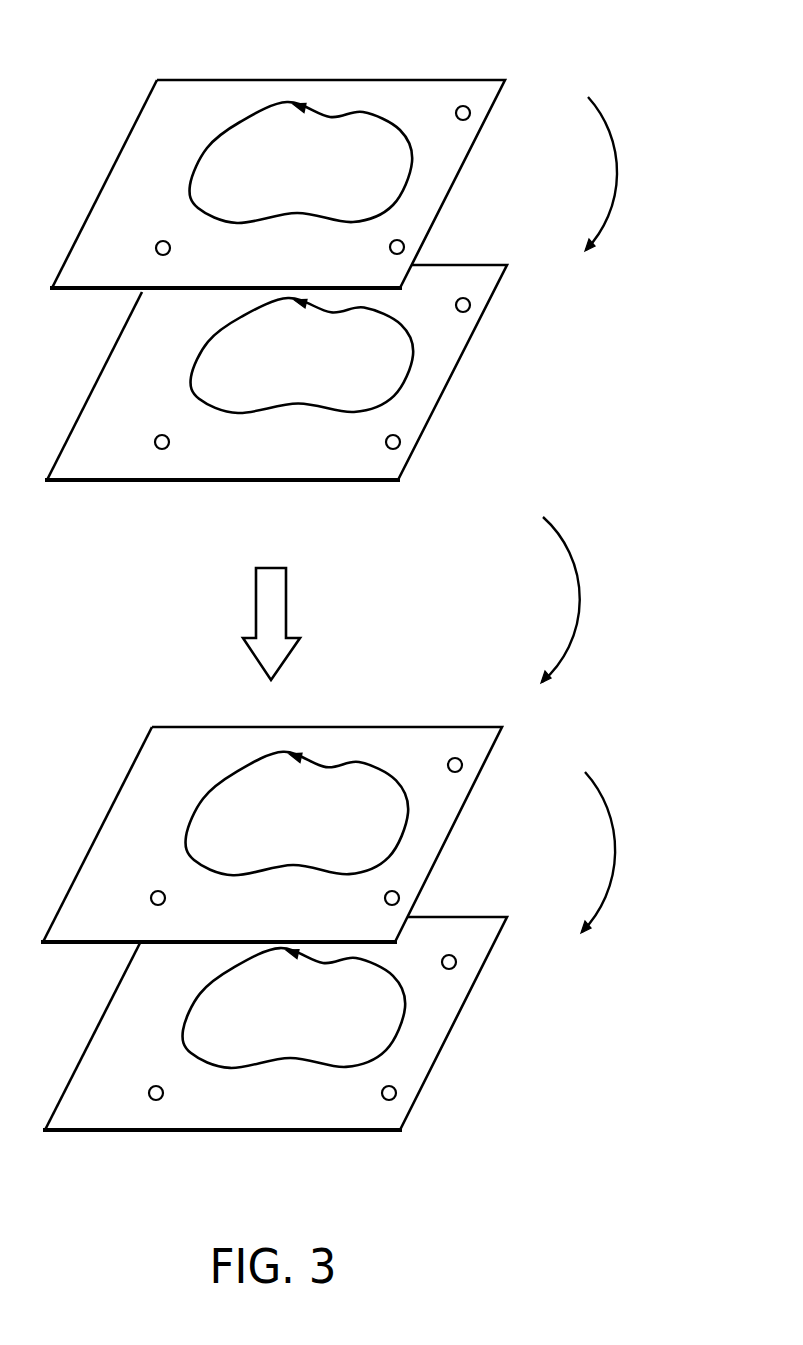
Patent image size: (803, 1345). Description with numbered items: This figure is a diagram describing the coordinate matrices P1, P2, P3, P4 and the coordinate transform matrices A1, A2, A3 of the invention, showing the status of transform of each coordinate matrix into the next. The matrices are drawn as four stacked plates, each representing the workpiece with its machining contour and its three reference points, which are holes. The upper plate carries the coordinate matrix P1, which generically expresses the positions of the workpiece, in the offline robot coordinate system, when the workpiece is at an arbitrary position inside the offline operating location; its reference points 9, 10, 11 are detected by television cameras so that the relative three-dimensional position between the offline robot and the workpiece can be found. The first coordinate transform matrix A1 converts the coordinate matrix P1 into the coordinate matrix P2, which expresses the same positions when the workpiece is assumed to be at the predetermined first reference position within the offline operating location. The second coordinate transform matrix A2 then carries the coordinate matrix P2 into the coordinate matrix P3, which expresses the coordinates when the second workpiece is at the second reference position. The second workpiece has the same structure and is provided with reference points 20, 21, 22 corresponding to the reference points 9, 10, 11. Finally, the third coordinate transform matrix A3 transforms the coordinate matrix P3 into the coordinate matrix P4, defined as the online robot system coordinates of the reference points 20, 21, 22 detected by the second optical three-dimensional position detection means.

The coordinate matrix P1 is at (220, 88).
The coordinate matrix P2 is at (122, 472).
The coordinate matrix P3 is at (213, 737).
The coordinate matrix P4 is at (112, 1113).
The reference point 9 is at (156, 250).
The reference point 10 is at (390, 247).
The reference point 11 is at (457, 108).
The reference point 20 is at (151, 898).
The reference point 21 is at (385, 898).
The reference point 22 is at (449, 766).
The first coordinate transform matrix A1 is at (617, 177).
The second coordinate transform matrix A2 is at (580, 600).
The third coordinate transform matrix A3 is at (615, 850).